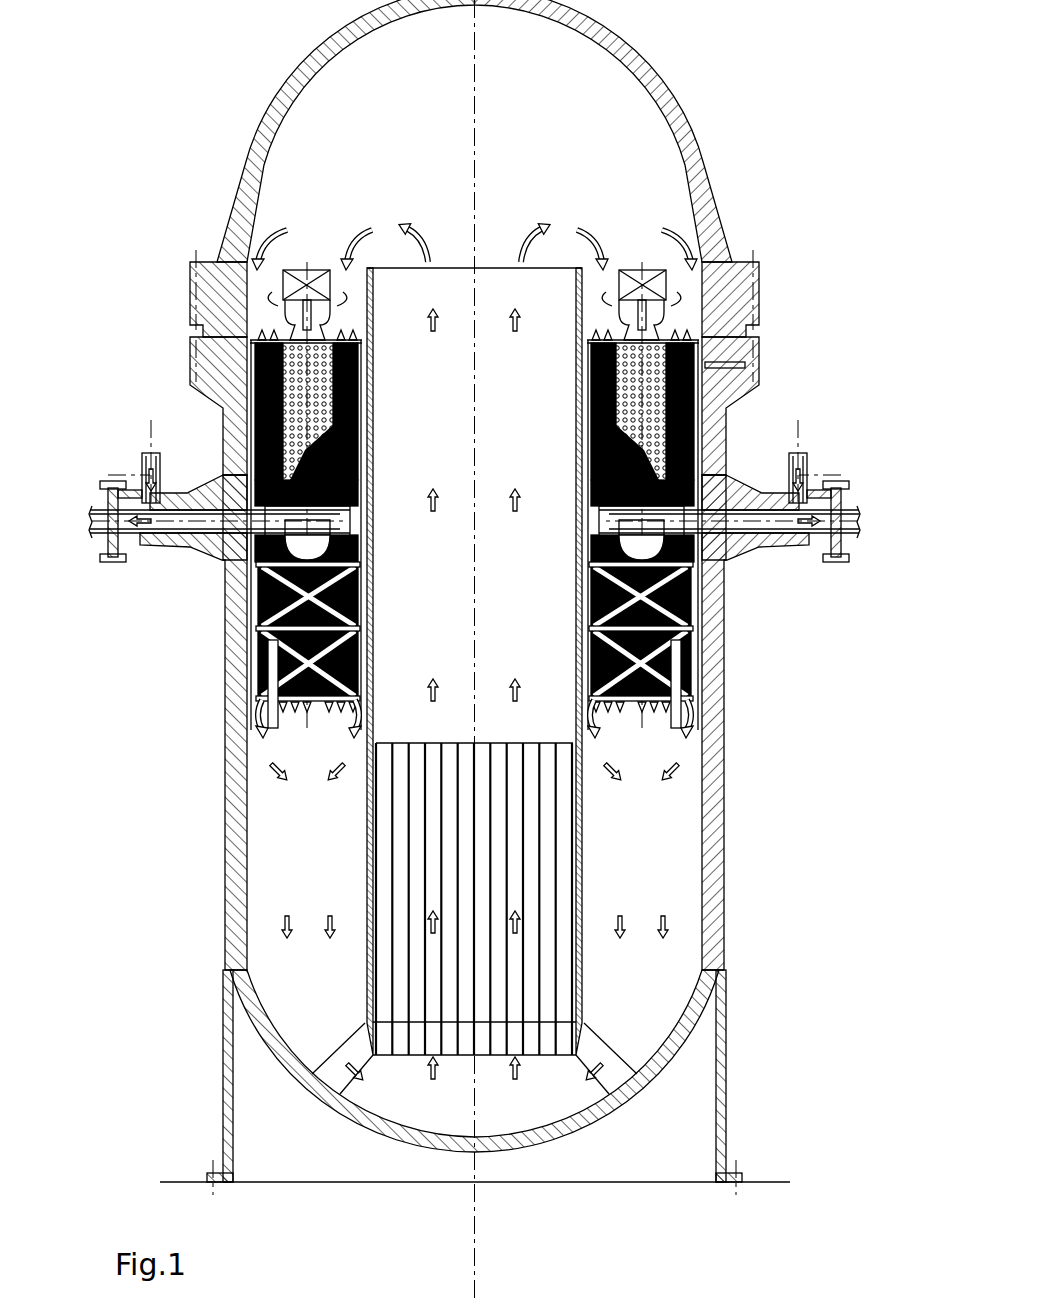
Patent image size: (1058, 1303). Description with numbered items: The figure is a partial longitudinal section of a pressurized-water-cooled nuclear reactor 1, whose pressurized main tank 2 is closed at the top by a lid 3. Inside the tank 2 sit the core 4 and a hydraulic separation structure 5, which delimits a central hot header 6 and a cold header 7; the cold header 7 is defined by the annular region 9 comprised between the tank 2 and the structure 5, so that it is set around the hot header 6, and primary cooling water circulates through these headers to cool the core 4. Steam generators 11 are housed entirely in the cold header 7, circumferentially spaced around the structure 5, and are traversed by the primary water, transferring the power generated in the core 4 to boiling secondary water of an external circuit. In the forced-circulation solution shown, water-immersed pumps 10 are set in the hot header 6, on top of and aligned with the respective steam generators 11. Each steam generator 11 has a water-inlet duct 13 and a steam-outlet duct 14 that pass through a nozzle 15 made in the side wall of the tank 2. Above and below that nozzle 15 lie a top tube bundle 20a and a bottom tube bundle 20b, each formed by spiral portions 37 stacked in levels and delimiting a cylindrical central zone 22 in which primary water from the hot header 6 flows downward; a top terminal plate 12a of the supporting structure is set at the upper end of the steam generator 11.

The nuclear reactor 1 is at (750, 148).
The main tank 2 is at (225, 810).
The lid 3 is at (296, 75).
The core 4 is at (527, 880).
The hydraulic separation structure 5 is at (372, 622).
The hot header 6 is at (440, 374).
The cold header 7 is at (320, 779).
The annular region 9 is at (651, 784).
The pumps 10 is at (287, 285).
The steam generators 11 is at (232, 328).
The top terminal plate 12a is at (735, 268).
The water-inlet duct 13 is at (176, 493).
The steam-outlet duct 14 is at (167, 523).
The nozzle 15 is at (223, 553).
The top tube bundle 20a is at (692, 423).
The bottom tube bundle 20b is at (722, 592).
The central zone 22 is at (752, 340).
The spiral portion 37 is at (707, 370).